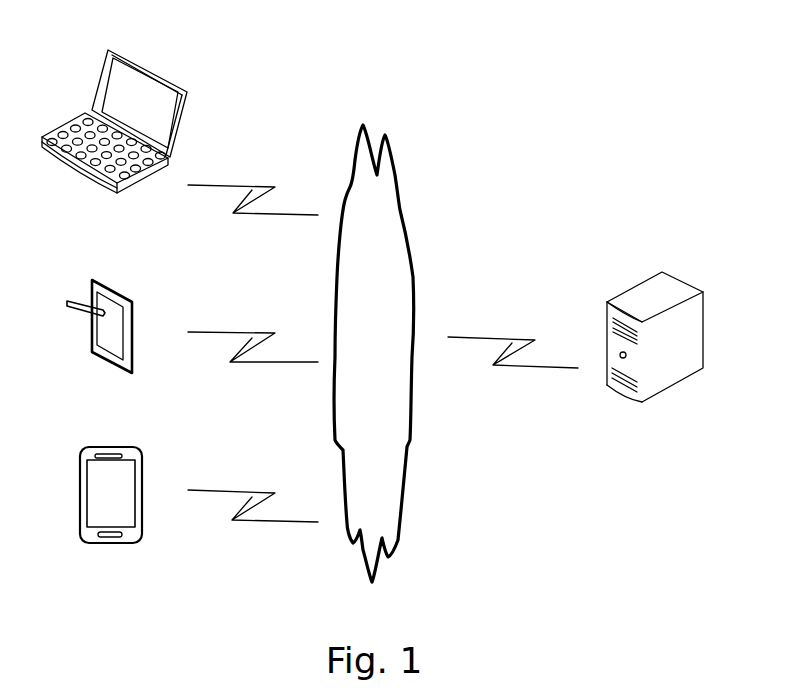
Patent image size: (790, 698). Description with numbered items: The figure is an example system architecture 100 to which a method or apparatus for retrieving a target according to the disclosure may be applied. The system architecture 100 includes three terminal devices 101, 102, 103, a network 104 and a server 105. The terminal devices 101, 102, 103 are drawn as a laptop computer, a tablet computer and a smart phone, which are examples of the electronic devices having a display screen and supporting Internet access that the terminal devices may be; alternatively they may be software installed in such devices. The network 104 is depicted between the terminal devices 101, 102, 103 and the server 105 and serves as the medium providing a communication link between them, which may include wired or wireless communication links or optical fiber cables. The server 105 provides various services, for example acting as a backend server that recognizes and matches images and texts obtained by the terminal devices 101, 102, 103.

The system architecture 100 is at (600, 41).
The terminal device 101 is at (114, 139).
The terminal device 102 is at (100, 344).
The terminal device 103 is at (111, 514).
The network 104 is at (373, 353).
The server 105 is at (655, 354).